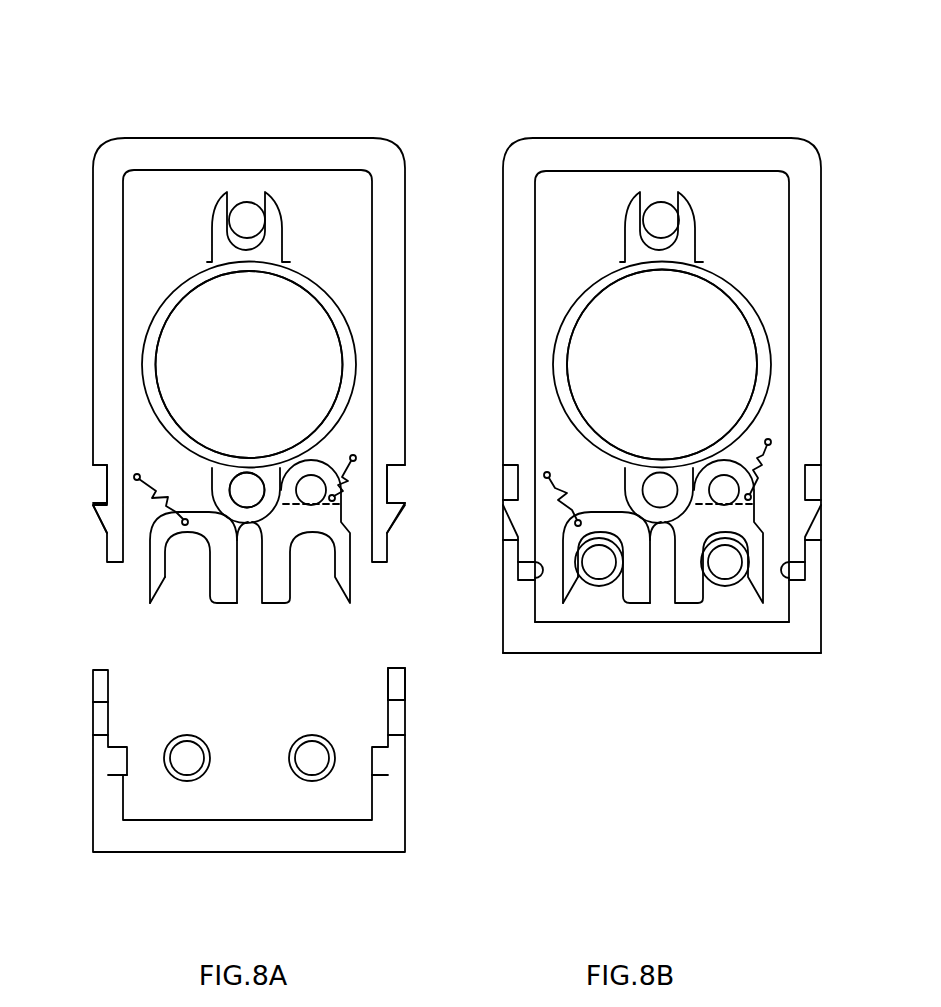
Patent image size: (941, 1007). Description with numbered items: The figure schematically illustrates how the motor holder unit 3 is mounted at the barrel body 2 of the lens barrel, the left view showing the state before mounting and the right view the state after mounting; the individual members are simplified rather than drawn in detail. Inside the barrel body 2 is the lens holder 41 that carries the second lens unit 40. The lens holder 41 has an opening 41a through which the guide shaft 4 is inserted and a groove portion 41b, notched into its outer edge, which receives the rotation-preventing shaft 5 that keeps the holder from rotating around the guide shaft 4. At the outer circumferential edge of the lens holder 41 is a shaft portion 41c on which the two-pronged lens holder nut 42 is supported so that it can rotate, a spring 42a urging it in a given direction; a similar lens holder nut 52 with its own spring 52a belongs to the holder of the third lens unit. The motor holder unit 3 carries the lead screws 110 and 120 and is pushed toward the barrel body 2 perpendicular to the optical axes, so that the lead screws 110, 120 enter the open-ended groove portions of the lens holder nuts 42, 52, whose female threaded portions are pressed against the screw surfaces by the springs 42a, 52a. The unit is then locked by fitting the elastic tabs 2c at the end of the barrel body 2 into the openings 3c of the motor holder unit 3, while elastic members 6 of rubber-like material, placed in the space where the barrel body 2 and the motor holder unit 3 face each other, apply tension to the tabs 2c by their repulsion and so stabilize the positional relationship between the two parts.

In FIG. 8A, the barrel body 2 is at (385, 380).
In FIG. 8B, the barrel body 2 is at (520, 383).
In FIG. 8A, the elastic tabs 2c is at (387, 517).
In FIG. 8B, the elastic tabs 2c is at (520, 512).
In FIG. 8A, the motor holder unit 3 is at (393, 810).
In FIG. 8B, the motor holder unit 3 is at (528, 637).
In FIG. 8A, the openings 3c is at (402, 696).
In FIG. 8B, the openings 3c is at (503, 557).
In FIG. 8A, the guide shaft 4 is at (243, 483).
In FIG. 8A, the rotation-preventing shaft 5 is at (247, 220).
In FIG. 8B, the rotation-preventing shaft 5 is at (657, 220).
In FIG. 8B, the elastic members 6 is at (772, 570).
In FIG. 8A, the second lens unit 40 is at (282, 369).
In FIG. 8B, the second lens unit 40 is at (622, 368).
In FIG. 8A, the lens holder 41 is at (327, 300).
In FIG. 8B, the lens holder 41 is at (578, 298).
In FIG. 8A, the opening 41a is at (228, 493).
In FIG. 8A, the groove portion 41b is at (262, 248).
In FIG. 8B, the groove portion 41b is at (642, 248).
In FIG. 8A, the shaft portion 41c is at (311, 490).
In FIG. 8A, the lens holder nut 42 is at (275, 597).
In FIG. 8B, the spring 42a is at (753, 466).
In FIG. 8A, the lens holder nut 52 is at (157, 573).
In FIG. 8B, the spring 52a is at (552, 482).
In FIG. 8A, the lead screw 110 is at (312, 773).
In FIG. 8A, the lead screw 120 is at (187, 773).